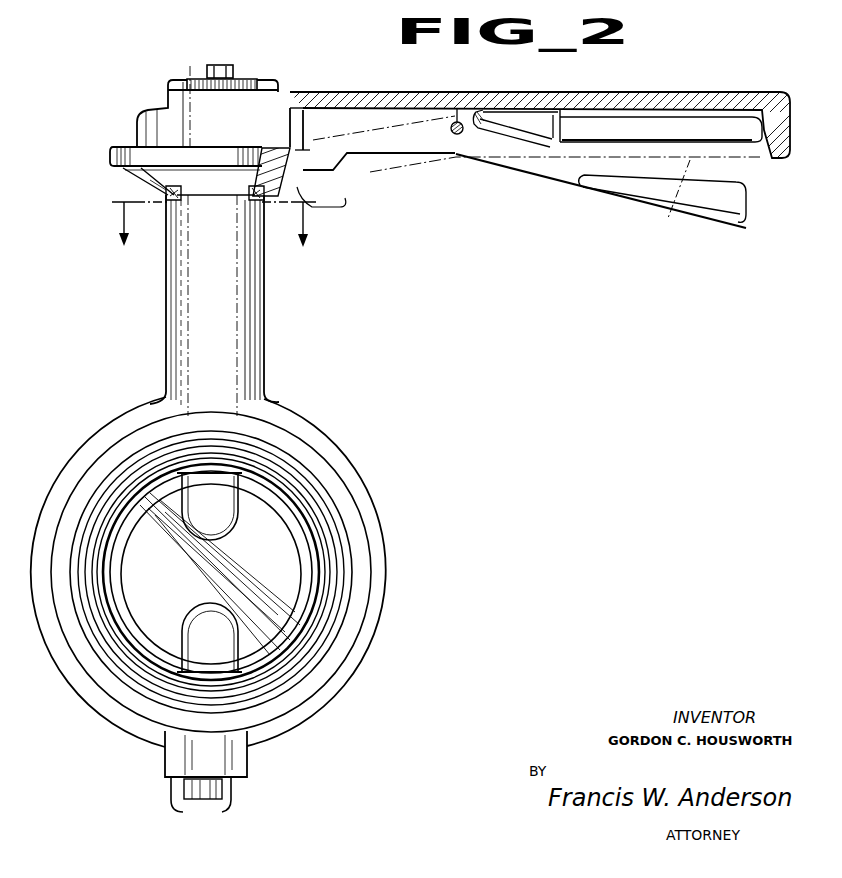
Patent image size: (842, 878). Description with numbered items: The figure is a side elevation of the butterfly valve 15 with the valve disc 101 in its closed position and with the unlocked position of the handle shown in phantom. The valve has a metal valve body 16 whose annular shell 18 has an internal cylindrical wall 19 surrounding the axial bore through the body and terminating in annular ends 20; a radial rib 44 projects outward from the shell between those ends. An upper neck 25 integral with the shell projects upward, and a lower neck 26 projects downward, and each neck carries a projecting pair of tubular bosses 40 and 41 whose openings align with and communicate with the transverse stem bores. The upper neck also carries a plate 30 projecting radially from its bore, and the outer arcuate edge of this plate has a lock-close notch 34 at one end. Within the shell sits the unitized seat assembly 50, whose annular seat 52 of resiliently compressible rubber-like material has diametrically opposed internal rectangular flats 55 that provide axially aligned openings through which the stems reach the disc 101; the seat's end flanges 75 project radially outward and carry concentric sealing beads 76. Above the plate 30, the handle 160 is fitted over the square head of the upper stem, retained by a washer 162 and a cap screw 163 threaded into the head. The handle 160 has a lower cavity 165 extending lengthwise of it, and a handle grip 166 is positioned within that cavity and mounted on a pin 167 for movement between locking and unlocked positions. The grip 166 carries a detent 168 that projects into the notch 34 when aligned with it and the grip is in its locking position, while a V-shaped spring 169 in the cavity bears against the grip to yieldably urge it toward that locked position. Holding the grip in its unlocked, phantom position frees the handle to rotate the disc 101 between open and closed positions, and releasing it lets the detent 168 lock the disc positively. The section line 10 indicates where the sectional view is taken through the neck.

The section line 10 is at (215, 224).
The butterfly valve 15 is at (384, 386).
The valve body 16 is at (262, 309).
The annular shell 18 is at (365, 584).
The internal cylindrical wall 19 is at (104, 482).
The annular ends 20 is at (360, 558).
The upper neck 25 is at (178, 322).
The lower neck 26 is at (232, 770).
The plate 30 is at (113, 157).
The lock-close notch 34 is at (286, 152).
The tubular bosses 40 is at (250, 202).
The tubular bosses 41 is at (228, 790).
The radial rib 44 is at (378, 538).
The unitized seat assembly 50 is at (316, 478).
The annular seat 52 is at (324, 654).
The internal rectangular flats 55 is at (181, 668).
The end flanges 75 is at (108, 686).
The concentric sealing beads 76 is at (343, 611).
The valve disc 101 is at (284, 588).
The handle 160 is at (640, 100).
The washer 162 is at (232, 82).
The cap screw 163 is at (226, 64).
The lower cavity 165 is at (706, 130).
The handle grip 166 is at (722, 220).
The pin 167 is at (457, 121).
The detent 168 is at (292, 165).
The V-shaped spring 169 is at (512, 110).